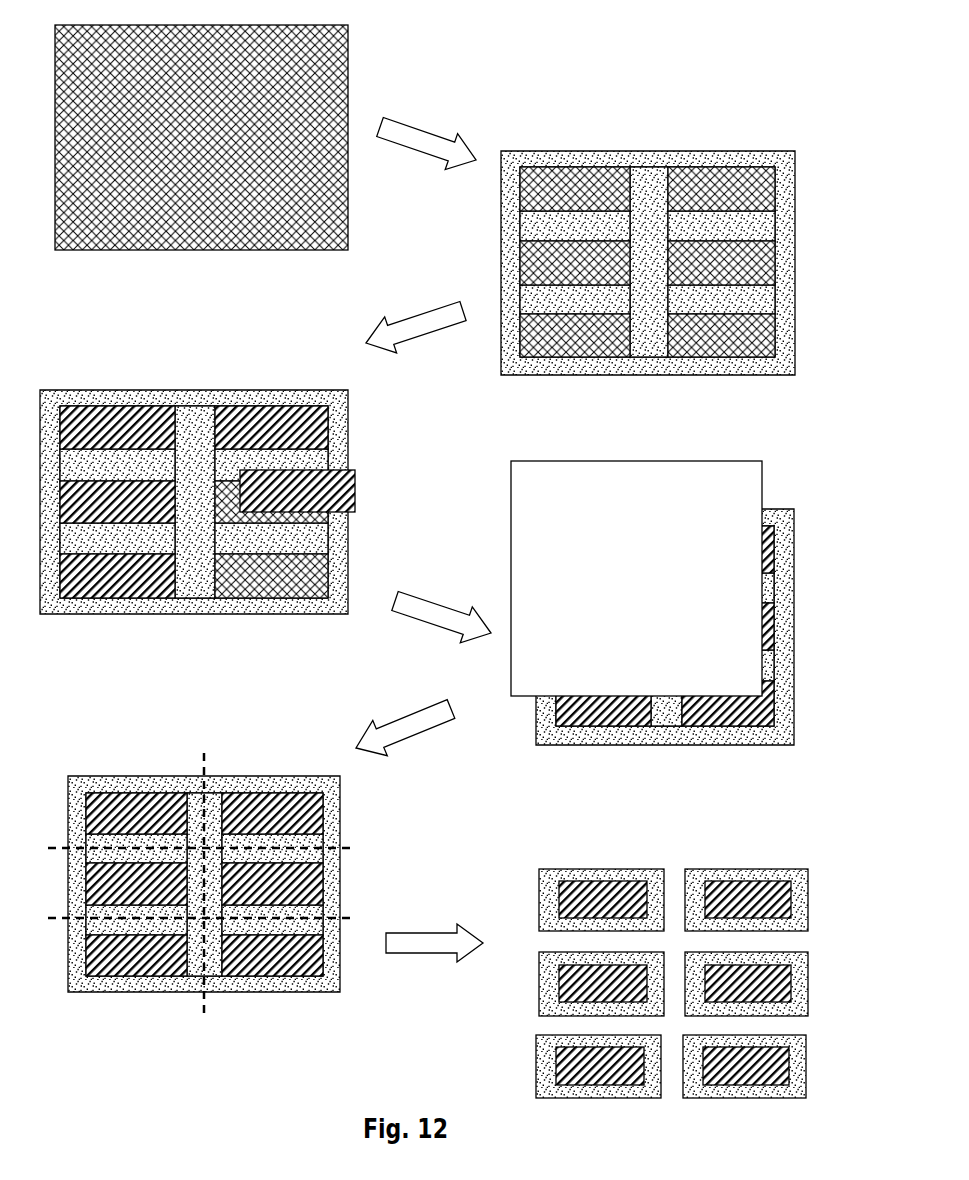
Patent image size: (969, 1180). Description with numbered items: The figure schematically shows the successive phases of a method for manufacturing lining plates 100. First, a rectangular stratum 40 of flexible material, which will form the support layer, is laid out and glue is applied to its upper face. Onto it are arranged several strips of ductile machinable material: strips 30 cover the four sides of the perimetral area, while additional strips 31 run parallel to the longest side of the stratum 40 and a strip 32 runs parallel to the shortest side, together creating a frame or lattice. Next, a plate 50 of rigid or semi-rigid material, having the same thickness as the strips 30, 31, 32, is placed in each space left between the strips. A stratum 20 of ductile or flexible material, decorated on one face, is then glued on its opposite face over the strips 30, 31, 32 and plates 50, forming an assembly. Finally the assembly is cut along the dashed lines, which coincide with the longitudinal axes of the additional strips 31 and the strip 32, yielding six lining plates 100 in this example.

The stratum of ductile or flexible material 20 is at (552, 542).
The strips 30 is at (498, 152).
The additional strips 31 is at (548, 216).
The strip 32 is at (647, 333).
The stratum 40 is at (280, 92).
The plate 50 is at (345, 470).
The lining plate 100 is at (570, 843).